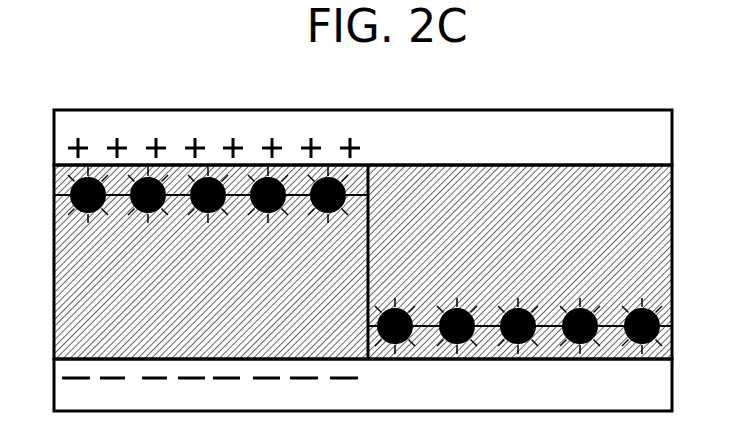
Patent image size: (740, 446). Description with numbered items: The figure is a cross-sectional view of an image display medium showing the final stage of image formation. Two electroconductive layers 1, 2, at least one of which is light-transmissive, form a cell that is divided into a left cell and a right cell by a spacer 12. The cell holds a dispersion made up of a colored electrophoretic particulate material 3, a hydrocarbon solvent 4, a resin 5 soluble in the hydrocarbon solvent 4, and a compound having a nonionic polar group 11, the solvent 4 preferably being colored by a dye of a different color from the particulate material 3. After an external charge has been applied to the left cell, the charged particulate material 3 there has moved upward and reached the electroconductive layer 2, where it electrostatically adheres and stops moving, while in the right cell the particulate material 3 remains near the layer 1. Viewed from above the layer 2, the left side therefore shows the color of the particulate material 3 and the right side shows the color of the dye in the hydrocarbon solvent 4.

The electroconductive layer 1 is at (662, 383).
The electroconductive layer 2 is at (651, 132).
The colored electrophoretic particulate material 3 is at (54, 199).
The hydrocarbon solvent 4 is at (654, 188).
The resin 5 is at (658, 230).
The compound having a nonionic polar group 11 is at (655, 273).
The spacer 12 is at (367, 188).